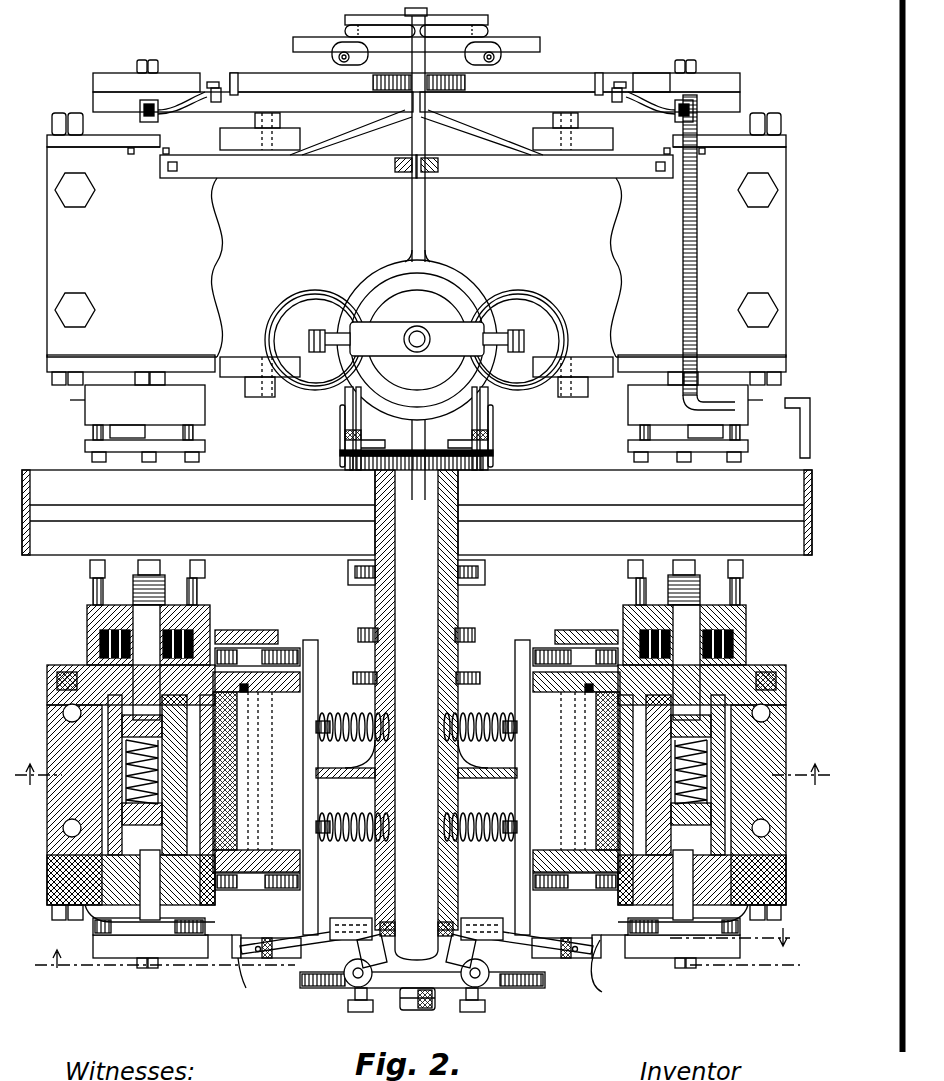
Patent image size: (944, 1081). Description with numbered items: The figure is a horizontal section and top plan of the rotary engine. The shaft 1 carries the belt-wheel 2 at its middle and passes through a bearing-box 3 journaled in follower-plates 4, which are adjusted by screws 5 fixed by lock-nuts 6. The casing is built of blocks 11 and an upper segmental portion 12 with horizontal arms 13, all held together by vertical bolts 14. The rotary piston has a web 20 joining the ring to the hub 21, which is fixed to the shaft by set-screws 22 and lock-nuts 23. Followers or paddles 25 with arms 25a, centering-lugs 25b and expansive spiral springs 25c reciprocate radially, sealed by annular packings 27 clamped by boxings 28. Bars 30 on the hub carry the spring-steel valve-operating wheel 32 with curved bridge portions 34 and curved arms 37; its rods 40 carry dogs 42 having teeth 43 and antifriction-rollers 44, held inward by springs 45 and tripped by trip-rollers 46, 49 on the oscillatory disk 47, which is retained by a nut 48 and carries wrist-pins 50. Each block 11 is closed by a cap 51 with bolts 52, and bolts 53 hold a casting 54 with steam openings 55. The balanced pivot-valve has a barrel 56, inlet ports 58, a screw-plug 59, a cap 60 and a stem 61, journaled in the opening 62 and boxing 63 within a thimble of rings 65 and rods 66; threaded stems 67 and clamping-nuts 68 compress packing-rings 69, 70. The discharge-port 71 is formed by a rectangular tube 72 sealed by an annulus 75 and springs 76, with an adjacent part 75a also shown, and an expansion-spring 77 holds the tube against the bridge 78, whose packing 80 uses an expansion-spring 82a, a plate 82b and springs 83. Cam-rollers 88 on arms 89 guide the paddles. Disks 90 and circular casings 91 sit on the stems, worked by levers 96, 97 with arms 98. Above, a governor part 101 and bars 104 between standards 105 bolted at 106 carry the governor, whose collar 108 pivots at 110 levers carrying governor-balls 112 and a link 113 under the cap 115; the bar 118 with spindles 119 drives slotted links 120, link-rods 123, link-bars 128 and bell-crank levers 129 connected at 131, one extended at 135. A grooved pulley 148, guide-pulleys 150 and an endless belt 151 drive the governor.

The shaft 1 is at (416, 779).
The belt-wheel 2 is at (417, 512).
The bearing-boxes 3 is at (458, 612).
The follower-plates 4 is at (395, 580).
The screws 5 is at (570, 765).
The lock-nuts 6 is at (576, 765).
The blocks 11 is at (47, 744).
The segmental portion 12 is at (499, 249).
The horizontal arms 13 is at (421, 249).
The vertical bolts 14 is at (416, 252).
The web 20 is at (416, 763).
The hub 21 is at (361, 795).
The set-screws 22 is at (486, 768).
The lock-nuts 23 is at (497, 657).
The followers or paddles 25 is at (420, 778).
The arms 25a is at (400, 778).
The centering-lugs 25b is at (427, 790).
The expansive spiral springs 25c is at (416, 765).
The annular packings 27 is at (417, 771).
The rectangular annular boxings 28 is at (416, 772).
The bars 30 is at (357, 912).
The valve-operating wheel 32 is at (450, 81).
The curved bridge portions 34 is at (415, 987).
The curved arms 37 is at (422, 930).
The rods 40 is at (416, 932).
The dogs or hooks 42 is at (382, 940).
The teeth 43 is at (416, 937).
The antifriction-rollers 44 is at (414, 962).
The springs 45 is at (354, 932).
The trip-roller 46 is at (468, 529).
The oscillatory disk 47 is at (419, 504).
The retaining-nut 48 is at (420, 1003).
The trip-roller 49 is at (399, 525).
The wrist-pins 50 is at (348, 1007).
The removable cap 51 is at (125, 355).
The bolts 52 is at (50, 122).
The bolts 53 is at (58, 386).
The casting 54 is at (416, 494).
The openings 55 is at (421, 657).
The cylindrical portion or barrel 56 is at (424, 615).
The inlet openings or ports 58 is at (416, 643).
The screw-plug 59 is at (428, 578).
The cap 60 is at (404, 857).
The stem 61 is at (405, 885).
The opening 62 is at (47, 688).
The boxing 63 is at (416, 427).
The rings 65 is at (419, 643).
The rods 66 is at (420, 648).
The threaded stems 67 is at (411, 511).
The clamping-nuts 68 is at (417, 499).
The packing-ring 69 is at (396, 590).
The packing-ring 70 is at (144, 682).
The discharge-port 71 is at (415, 757).
The rectangular tube 72 is at (672, 717).
The annulus 75 is at (416, 768).
The plate 75a is at (429, 837).
The springs 76 is at (424, 802).
The expansion-spring 77 is at (421, 772).
The bridge 78 is at (416, 771).
The packing 80 is at (416, 780).
The expansion-spring 82a is at (407, 766).
The plate 82b is at (421, 759).
The expansion-springs 83 is at (429, 778).
The cam-rollers 88 is at (416, 524).
The arms 89 is at (416, 522).
The disks or caps 90 is at (95, 80).
The circular casings 91 is at (93, 102).
The lever 96 is at (437, 976).
The lever 97 is at (416, 539).
The arm 98 is at (235, 73).
The wheel 101 is at (417, 340).
The bars 104 is at (411, 220).
The standards 105 is at (416, 166).
The bolts 106 is at (165, 190).
The collar 108 is at (417, 340).
The pivot 110 is at (312, 332).
The governor-balls 112 is at (416, 340).
The link 113 is at (417, 339).
The cap 115 is at (404, 339).
The bar 118 is at (454, 258).
The cylindrical spindles 119 is at (428, 12).
The slotted links 120 is at (488, 20).
The link-rods 123 is at (416, 30).
The link-bars 128 is at (292, 112).
The bell-crank levers 129 is at (140, 115).
The pivot connection 131 is at (212, 80).
The extension 135 is at (683, 281).
The grooved pulley 148 is at (352, 470).
The guide-pulleys 150 is at (338, 414).
The endless belt or cable 151 is at (345, 444).